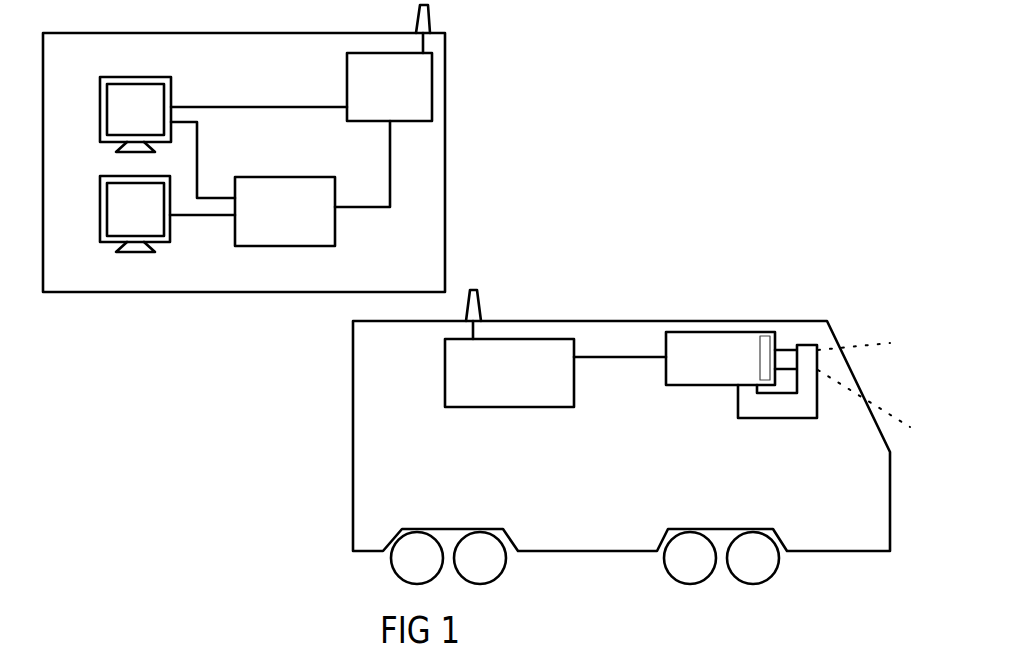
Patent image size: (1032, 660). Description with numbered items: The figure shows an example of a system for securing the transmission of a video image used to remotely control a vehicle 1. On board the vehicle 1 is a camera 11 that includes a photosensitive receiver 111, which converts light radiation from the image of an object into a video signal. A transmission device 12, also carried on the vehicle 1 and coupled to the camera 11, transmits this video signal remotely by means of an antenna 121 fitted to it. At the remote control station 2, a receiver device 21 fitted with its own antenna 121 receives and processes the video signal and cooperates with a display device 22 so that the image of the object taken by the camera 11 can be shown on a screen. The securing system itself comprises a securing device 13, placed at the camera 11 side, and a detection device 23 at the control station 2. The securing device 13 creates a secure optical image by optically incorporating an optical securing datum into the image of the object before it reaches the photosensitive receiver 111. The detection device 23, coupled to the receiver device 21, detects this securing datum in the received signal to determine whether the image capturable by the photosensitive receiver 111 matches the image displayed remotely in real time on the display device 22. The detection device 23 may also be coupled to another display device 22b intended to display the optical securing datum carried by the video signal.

The vehicle 1 is at (353, 537).
The camera 11 is at (720, 358).
The photosensitive receiver 111 is at (765, 335).
The transmission device 12 is at (555, 373).
The antenna 121 is at (430, 22).
The securing device 13 is at (772, 418).
The control station 2 is at (445, 176).
The receiver device 21 is at (389, 87).
The display device 22 is at (135, 114).
The another display device 22b is at (135, 214).
The detection device 23 is at (285, 211).